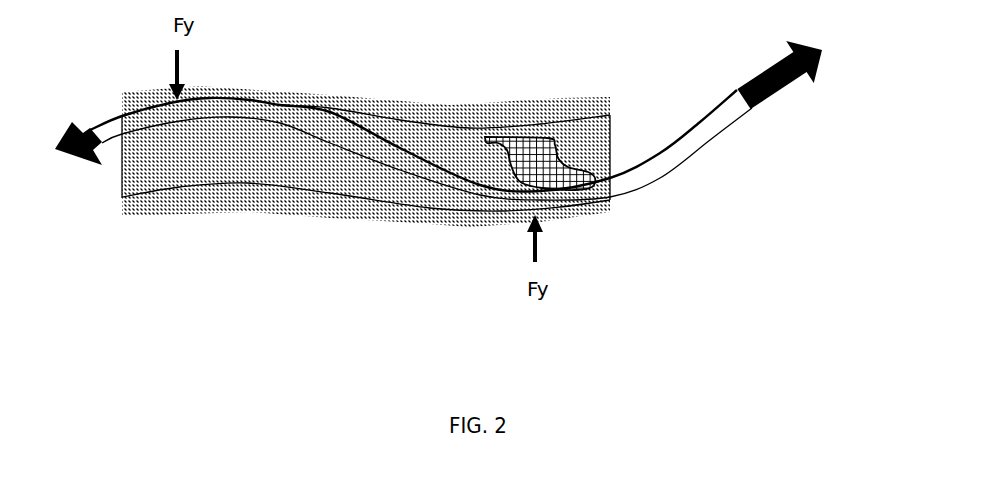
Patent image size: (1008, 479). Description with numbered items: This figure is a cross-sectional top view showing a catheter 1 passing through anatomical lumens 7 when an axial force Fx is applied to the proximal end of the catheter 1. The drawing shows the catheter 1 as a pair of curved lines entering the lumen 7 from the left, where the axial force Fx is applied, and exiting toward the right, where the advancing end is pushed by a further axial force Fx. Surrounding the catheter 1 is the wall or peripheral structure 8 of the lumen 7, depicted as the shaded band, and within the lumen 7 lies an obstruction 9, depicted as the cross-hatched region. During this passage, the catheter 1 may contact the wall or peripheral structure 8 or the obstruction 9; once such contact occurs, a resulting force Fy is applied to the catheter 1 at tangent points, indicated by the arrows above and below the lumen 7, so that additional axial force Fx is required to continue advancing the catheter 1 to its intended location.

The catheter 1 is at (648, 177).
The anatomical lumen 7 is at (592, 155).
The wall or peripheral structure 8 is at (497, 117).
The obstruction 9 is at (518, 167).